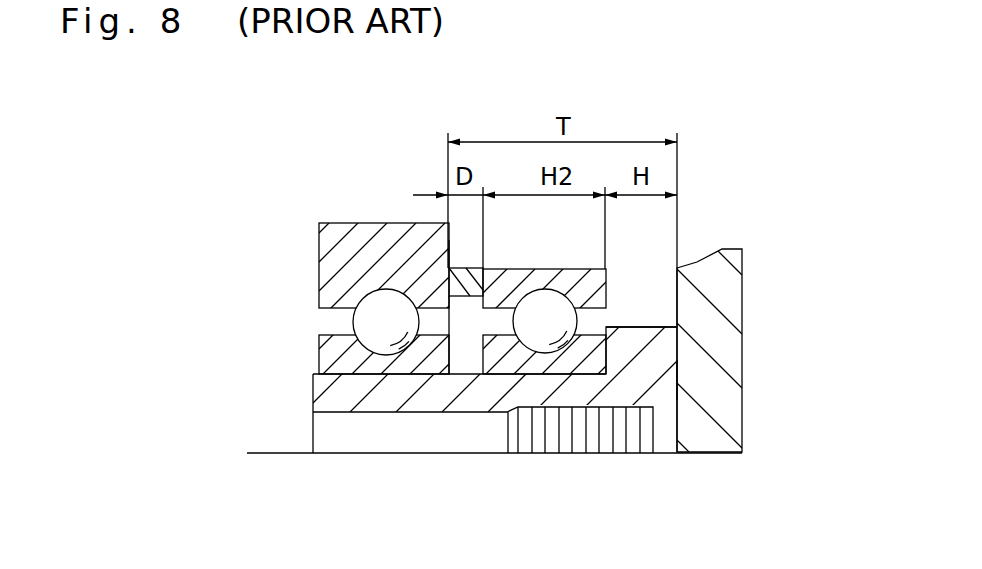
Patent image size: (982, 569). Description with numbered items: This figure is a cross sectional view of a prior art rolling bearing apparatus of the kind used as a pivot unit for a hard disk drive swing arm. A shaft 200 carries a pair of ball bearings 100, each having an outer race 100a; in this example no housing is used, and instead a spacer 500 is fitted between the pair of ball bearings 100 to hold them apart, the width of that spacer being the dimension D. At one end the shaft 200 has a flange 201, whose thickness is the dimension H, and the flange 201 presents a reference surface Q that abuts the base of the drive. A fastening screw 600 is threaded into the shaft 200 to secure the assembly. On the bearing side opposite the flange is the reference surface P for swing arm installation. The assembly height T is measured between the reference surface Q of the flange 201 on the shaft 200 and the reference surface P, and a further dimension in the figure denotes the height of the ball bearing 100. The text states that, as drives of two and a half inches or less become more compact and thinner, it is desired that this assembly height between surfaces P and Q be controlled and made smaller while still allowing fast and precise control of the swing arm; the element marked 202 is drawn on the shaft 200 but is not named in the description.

The ball bearing 100 is at (506, 266).
The outer race 100a is at (332, 248).
The shaft 200 is at (502, 353).
The flange 201 is at (643, 335).
The shoulder end face 202 is at (606, 309).
The spacer 500 is at (470, 268).
The fastening screw 600 is at (612, 408).
The reference surface for swing arm installation P is at (452, 247).
The reference surface of the flange Q is at (680, 378).